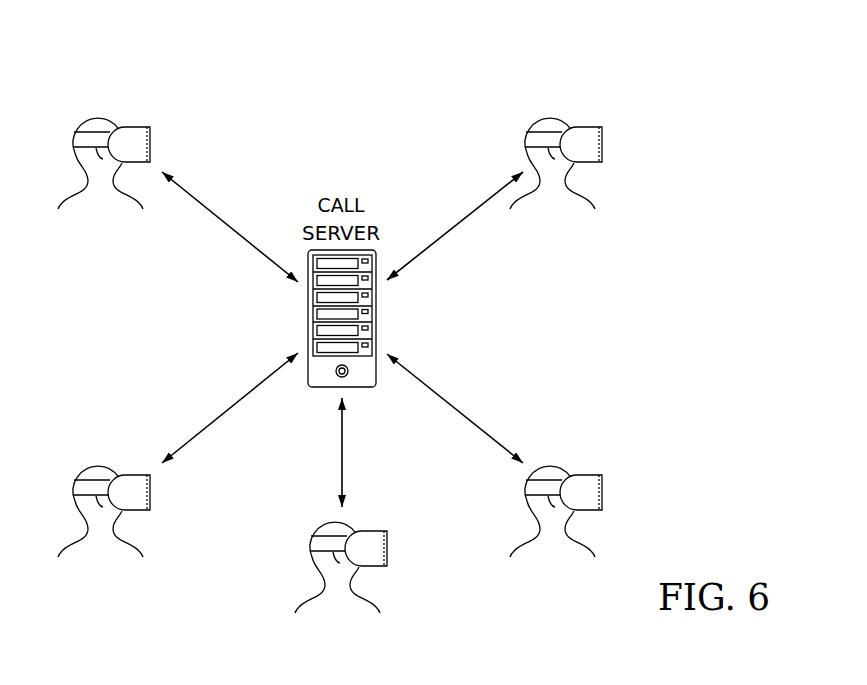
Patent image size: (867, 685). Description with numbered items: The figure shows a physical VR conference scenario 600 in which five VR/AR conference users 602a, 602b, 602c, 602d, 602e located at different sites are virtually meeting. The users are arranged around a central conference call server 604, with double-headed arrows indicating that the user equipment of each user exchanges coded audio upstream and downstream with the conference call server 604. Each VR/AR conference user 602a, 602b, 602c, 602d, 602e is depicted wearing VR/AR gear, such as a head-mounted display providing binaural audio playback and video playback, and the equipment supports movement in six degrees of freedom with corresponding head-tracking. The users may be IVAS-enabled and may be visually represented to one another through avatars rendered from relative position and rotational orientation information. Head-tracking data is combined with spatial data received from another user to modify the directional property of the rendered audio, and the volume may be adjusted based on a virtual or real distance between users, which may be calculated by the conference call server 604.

The physical VR conference scenario 600 is at (224, 58).
The VR/AR conference user 602a is at (102, 117).
The VR/AR conference user 602b is at (552, 117).
The VR/AR conference user 602c is at (552, 466).
The VR/AR conference user 602d is at (102, 466).
The VR/AR conference user 602e is at (310, 557).
The conference call server 604 is at (308, 317).